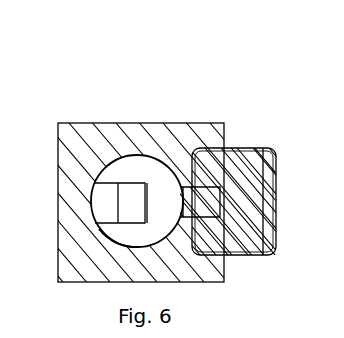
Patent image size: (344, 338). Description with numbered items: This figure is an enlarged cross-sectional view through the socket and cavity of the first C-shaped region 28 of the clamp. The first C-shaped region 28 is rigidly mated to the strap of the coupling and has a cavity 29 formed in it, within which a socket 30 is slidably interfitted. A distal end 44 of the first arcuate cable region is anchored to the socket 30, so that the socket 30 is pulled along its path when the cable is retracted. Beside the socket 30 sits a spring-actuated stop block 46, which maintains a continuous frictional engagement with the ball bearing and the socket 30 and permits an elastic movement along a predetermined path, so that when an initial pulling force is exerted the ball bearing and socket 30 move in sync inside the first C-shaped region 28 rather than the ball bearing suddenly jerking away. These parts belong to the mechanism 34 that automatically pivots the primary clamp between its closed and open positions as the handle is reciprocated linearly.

The first C-shaped region 28 is at (83, 133).
The cavity 29 is at (125, 157).
The socket 30 is at (152, 168).
The mechanism 34 is at (262, 107).
The distal end 44 is at (100, 229).
The spring-actuated stop block 46 is at (235, 240).